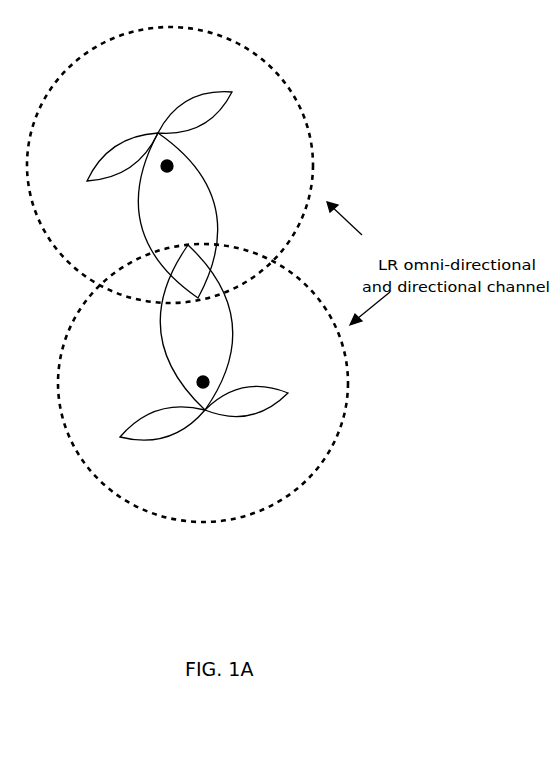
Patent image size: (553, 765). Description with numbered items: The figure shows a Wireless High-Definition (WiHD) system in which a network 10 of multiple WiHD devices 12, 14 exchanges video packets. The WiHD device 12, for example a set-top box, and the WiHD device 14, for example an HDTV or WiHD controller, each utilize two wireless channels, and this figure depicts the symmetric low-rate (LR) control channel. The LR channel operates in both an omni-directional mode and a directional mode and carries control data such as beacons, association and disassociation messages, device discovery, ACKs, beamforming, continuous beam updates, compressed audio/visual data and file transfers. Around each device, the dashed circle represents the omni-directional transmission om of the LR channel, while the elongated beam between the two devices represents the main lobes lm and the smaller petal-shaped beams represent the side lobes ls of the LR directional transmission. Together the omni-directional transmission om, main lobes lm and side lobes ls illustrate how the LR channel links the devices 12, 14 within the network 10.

The network 10 is at (204, 629).
The WiHD device 12 is at (202, 374).
The WiHD device 14 is at (165, 178).
The side lobes ls is at (196, 92).
The main lobes lm is at (141, 219).
The omni-directional transmission om is at (312, 132).